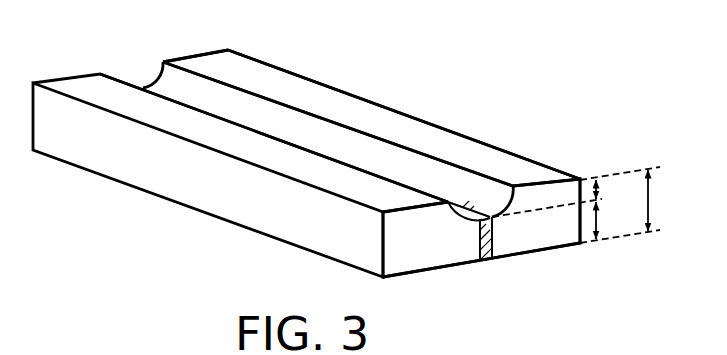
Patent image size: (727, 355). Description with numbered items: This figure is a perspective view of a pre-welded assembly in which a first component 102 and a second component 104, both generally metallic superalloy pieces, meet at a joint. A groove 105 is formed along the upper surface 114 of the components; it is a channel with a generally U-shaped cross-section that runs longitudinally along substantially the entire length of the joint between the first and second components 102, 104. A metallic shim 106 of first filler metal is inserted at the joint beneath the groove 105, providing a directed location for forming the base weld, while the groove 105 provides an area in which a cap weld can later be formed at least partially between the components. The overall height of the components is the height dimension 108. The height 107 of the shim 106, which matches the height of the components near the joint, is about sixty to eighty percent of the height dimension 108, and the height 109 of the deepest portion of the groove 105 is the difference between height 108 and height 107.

The first component 102 is at (430, 262).
The second component 104 is at (563, 236).
The groove 105 is at (141, 76).
The shim 106 is at (485, 212).
The height of shim 107 is at (598, 229).
The height dimension 108 is at (649, 212).
The height of groove 109 is at (600, 179).
The upper surface 114 is at (274, 79).